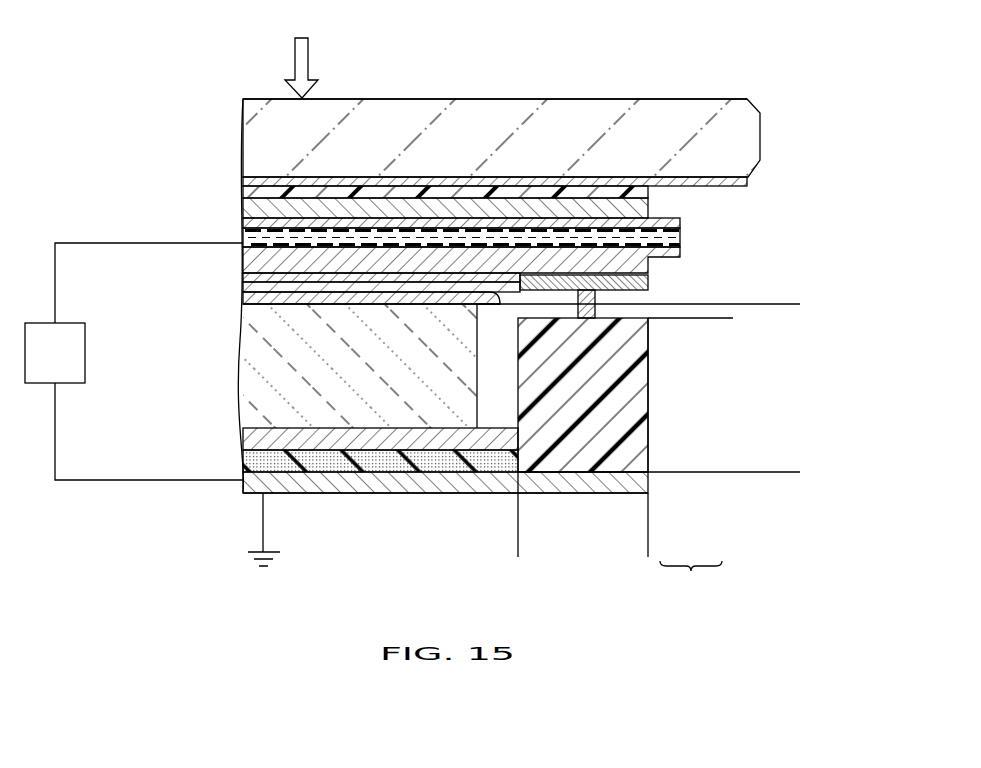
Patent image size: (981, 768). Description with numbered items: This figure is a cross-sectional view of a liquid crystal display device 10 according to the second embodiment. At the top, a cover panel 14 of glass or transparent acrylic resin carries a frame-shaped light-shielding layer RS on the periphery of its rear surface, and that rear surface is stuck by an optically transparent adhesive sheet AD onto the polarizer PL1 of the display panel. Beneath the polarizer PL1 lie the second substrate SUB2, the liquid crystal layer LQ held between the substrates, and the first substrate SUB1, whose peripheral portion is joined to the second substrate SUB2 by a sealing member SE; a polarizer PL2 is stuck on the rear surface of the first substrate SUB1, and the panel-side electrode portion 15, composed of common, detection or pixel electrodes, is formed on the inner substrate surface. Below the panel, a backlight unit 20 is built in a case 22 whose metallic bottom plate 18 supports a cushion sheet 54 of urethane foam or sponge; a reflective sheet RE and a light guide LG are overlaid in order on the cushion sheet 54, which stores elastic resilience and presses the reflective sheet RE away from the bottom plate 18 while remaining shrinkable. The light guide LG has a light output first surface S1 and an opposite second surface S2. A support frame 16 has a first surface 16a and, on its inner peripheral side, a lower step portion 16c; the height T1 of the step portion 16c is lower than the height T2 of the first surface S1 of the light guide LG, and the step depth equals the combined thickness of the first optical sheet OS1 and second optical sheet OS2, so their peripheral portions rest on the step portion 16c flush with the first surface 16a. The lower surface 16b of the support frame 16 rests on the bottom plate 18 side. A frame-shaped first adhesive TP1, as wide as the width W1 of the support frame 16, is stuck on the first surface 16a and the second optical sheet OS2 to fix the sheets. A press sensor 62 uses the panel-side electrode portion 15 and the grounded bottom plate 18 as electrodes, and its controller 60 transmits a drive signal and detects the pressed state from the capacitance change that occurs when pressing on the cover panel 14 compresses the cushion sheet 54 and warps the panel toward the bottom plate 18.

The display device 10 is at (728, 82).
The cover panel 14 is at (278, 108).
The panel-side electrode portion 15 is at (394, 243).
The support frame 16 is at (632, 428).
The first surface 16a is at (610, 301).
The bottom surface of cushion member 16b is at (559, 475).
The step portion 16c is at (550, 316).
The bottom plate 18 is at (645, 484).
The backlight unit 20 is at (337, 510).
The case 22 is at (691, 577).
The cushion sheet 54 is at (454, 494).
The controller 60 is at (69, 322).
The press sensor 62 is at (123, 488).
The light-shielding layer RS is at (716, 188).
The adhesive sheet AD is at (243, 183).
The polarizer PL1 is at (243, 207).
The second substrate SUB2 is at (243, 222).
The liquid crystal layer LQ is at (243, 238).
The sealing member SE is at (681, 242).
The first substrate SUB1 is at (243, 257).
The polarizer PL2 is at (243, 279).
The first adhesive TP1 is at (650, 280).
The second optical sheet OS2 is at (243, 290).
The first optical sheet OS1 is at (243, 300).
The first surface S1 is at (366, 305).
The second surface S2 is at (243, 438).
The light guide LG is at (253, 393).
The reflective sheet RE is at (397, 465).
The width of the support frame W1 is at (518, 538).
The height of the step portion T1 is at (713, 318).
The height of the first surface of the light guide T2 is at (777, 304).